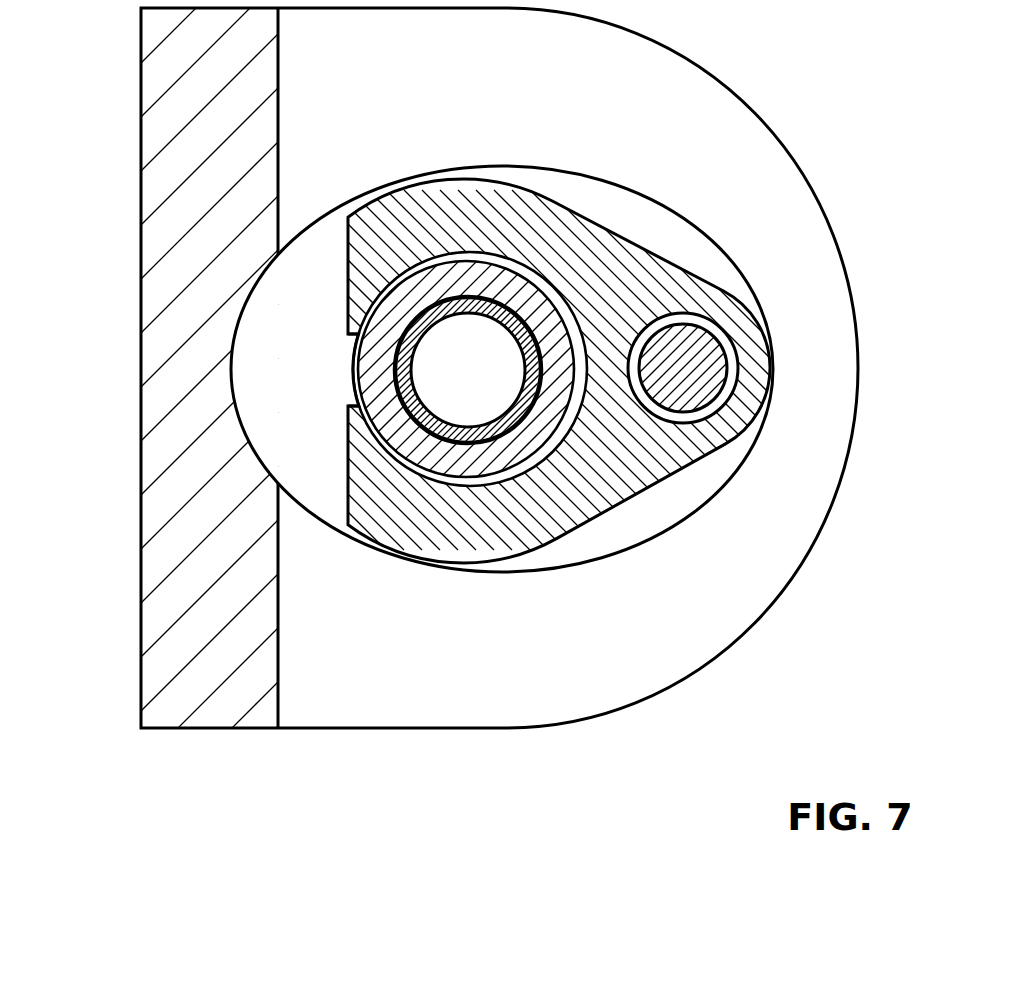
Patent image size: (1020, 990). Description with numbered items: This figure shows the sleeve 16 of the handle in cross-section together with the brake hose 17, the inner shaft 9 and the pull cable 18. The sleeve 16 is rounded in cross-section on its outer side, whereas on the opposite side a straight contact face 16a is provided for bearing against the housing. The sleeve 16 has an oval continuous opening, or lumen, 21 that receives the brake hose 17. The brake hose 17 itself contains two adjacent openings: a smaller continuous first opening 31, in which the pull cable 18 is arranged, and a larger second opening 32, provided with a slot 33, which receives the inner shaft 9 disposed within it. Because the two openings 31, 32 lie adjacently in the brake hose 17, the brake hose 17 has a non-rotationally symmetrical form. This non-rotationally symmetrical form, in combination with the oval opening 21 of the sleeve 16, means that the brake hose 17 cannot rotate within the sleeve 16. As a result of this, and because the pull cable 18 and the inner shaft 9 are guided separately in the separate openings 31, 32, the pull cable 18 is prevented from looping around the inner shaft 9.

The inner shaft 9 is at (440, 278).
The sleeve 16 is at (742, 588).
The straight contact face 16a is at (141, 498).
The brake hose 17 is at (612, 272).
The pull cable 18 is at (712, 372).
The oval continuous opening 21 is at (617, 527).
The first opening 31 is at (690, 332).
The second opening 32 is at (437, 483).
The slot 33 is at (348, 372).